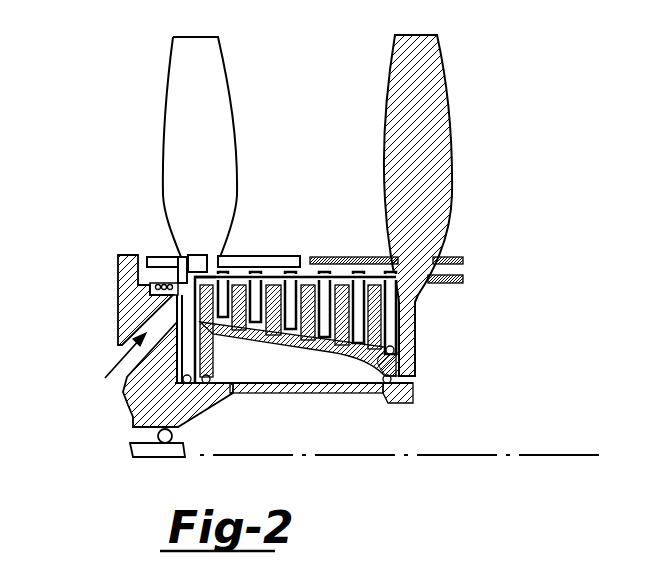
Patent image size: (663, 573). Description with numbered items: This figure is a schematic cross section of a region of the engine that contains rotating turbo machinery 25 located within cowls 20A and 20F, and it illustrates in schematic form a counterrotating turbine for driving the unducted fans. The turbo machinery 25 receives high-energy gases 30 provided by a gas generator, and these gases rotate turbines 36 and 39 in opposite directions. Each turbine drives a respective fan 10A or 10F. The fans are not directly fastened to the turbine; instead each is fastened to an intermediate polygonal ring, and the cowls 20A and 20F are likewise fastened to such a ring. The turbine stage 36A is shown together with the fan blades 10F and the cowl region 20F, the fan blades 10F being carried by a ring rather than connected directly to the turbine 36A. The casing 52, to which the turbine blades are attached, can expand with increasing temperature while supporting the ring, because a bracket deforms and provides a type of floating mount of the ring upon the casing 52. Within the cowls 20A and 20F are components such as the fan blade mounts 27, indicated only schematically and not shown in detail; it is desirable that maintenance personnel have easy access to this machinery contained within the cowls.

The fan 10F is at (220, 131).
The fan 10A is at (440, 112).
The cowl 20A is at (333, 256).
The cowl 20F is at (272, 256).
The fan blade mount 27 is at (185, 253).
The turbine stage 36A is at (186, 298).
The casing 52 is at (238, 280).
The turbine 36 is at (285, 346).
The turbine 39 is at (306, 347).
The high-energy gases 30 is at (114, 362).
The rotating turbo machinery 25 is at (461, 352).